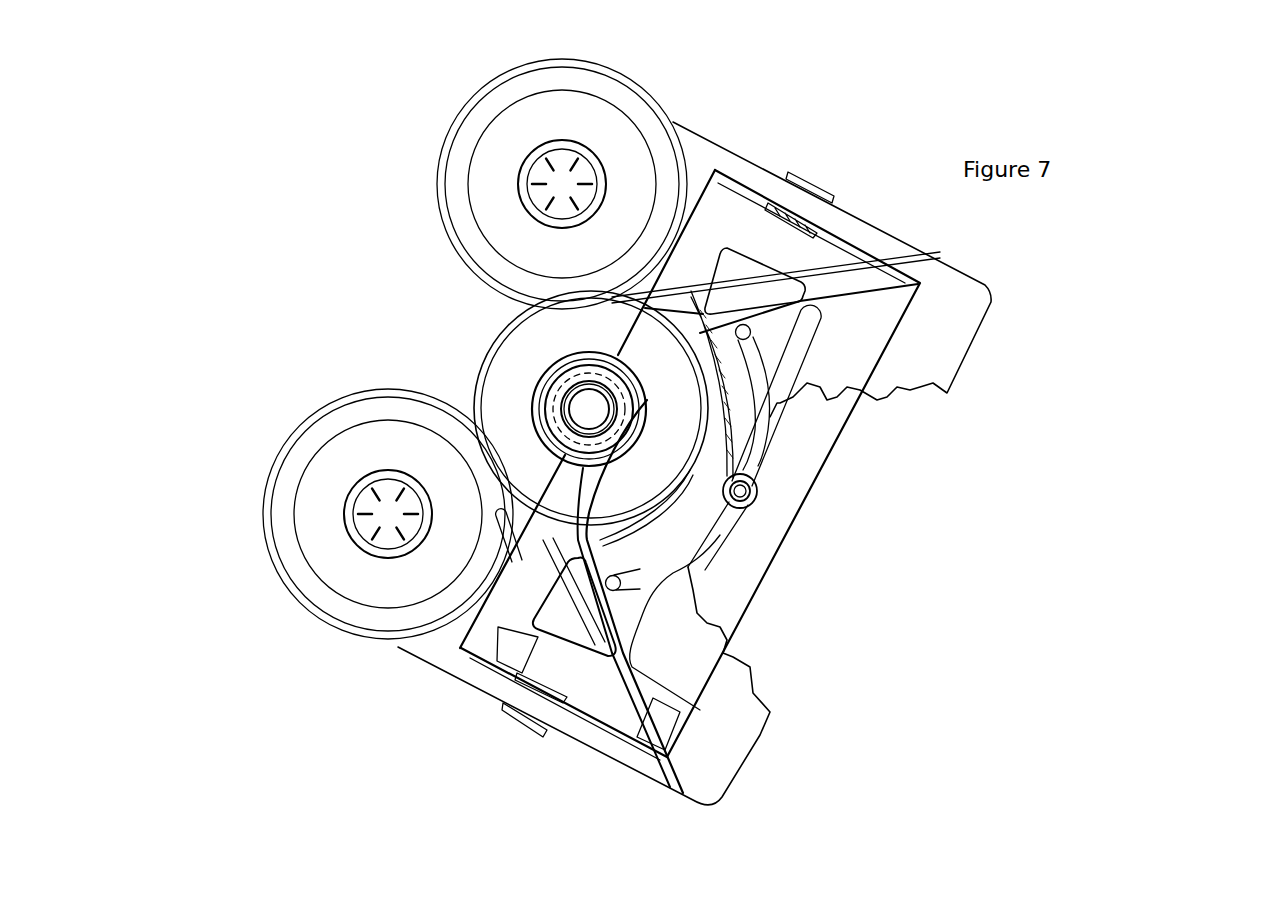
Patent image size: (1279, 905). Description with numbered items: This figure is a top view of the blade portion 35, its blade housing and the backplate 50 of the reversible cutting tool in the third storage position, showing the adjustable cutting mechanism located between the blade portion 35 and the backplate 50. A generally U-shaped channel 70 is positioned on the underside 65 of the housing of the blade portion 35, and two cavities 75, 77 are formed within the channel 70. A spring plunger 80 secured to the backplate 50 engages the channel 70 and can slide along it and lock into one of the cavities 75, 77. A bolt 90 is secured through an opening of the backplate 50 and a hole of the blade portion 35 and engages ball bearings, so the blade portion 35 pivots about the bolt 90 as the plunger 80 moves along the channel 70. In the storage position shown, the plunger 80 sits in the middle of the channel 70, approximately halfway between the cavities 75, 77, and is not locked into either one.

The blade portion 35 is at (640, 329).
The backplate 50 is at (733, 595).
The underside 65 is at (947, 300).
The channel 70 is at (758, 393).
The cavity 75 is at (606, 585).
The cavity 77 is at (744, 325).
The plunger 80 is at (758, 497).
The bolt 90 is at (587, 408).